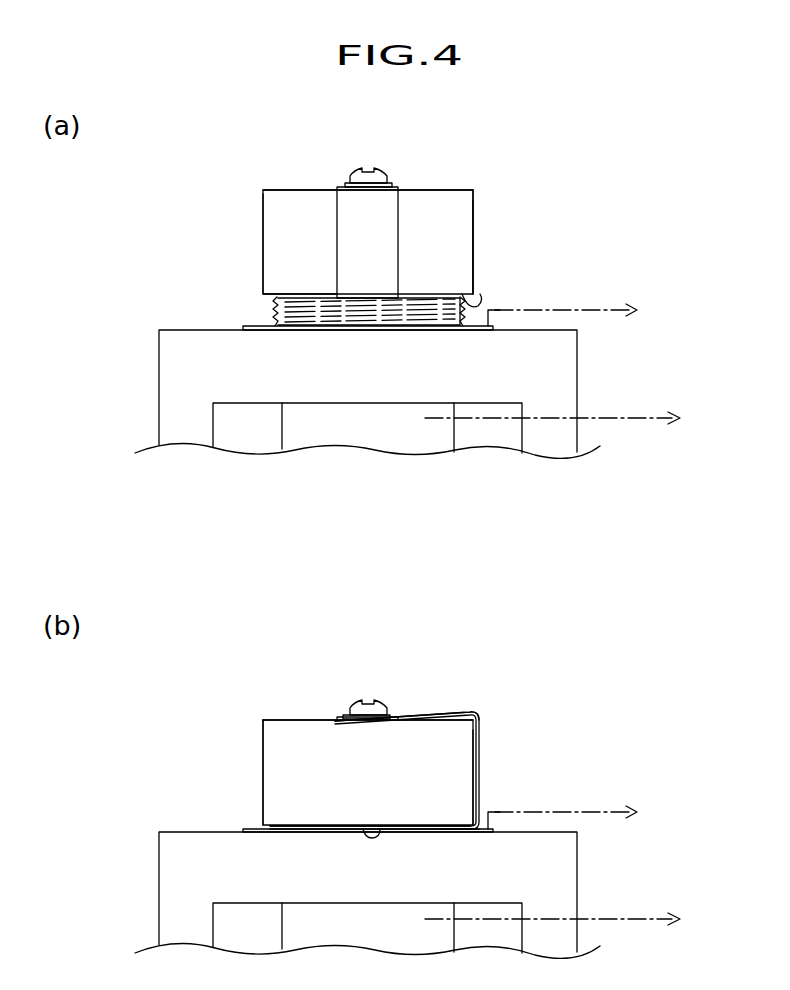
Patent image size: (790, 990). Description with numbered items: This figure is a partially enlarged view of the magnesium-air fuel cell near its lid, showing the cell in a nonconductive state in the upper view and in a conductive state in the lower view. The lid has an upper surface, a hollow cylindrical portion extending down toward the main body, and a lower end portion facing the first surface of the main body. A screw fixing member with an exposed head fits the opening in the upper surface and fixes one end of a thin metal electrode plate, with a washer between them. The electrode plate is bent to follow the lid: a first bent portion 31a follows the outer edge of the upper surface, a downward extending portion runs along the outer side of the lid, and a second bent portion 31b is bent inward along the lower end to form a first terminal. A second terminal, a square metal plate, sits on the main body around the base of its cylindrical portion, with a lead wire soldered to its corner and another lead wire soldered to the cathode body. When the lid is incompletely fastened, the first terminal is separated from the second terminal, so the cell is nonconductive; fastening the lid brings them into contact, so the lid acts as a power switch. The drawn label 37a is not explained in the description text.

The first bent portion 31a is at (478, 713).
The second bent portion 31b is at (475, 829).
The side face of adhesive layer 37a is at (292, 315).